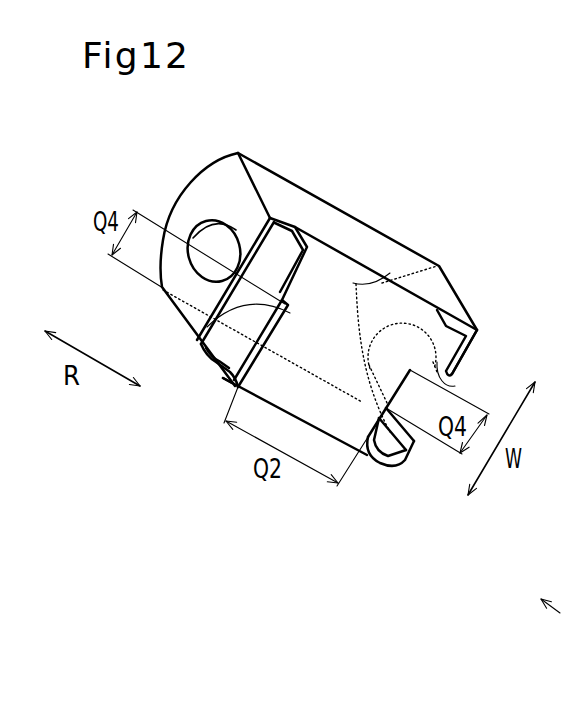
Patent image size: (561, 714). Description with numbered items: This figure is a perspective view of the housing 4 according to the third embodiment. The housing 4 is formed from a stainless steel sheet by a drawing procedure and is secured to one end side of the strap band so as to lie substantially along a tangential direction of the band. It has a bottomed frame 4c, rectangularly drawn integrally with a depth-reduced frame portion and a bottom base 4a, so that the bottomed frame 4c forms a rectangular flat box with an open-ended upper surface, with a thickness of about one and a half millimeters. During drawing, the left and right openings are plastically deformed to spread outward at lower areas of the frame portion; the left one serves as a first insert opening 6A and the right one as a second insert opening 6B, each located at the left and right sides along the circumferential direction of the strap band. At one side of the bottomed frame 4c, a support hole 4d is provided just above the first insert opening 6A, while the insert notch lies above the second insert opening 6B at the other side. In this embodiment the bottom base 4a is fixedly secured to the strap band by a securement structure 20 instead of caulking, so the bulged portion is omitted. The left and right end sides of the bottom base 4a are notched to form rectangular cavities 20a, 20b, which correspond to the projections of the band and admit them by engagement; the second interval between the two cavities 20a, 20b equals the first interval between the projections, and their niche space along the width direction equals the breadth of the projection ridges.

The housing 4 is at (319, 303).
The bottomed frame 4c is at (367, 222).
The bottom base 4a is at (390, 273).
The support hole 4d is at (213, 221).
The securement structure 20 is at (294, 288).
The rectangular cavity 20a is at (222, 377).
The rectangular cavity 20b is at (412, 372).
The first insert opening 6A is at (220, 352).
The second insert opening 6B is at (455, 386).